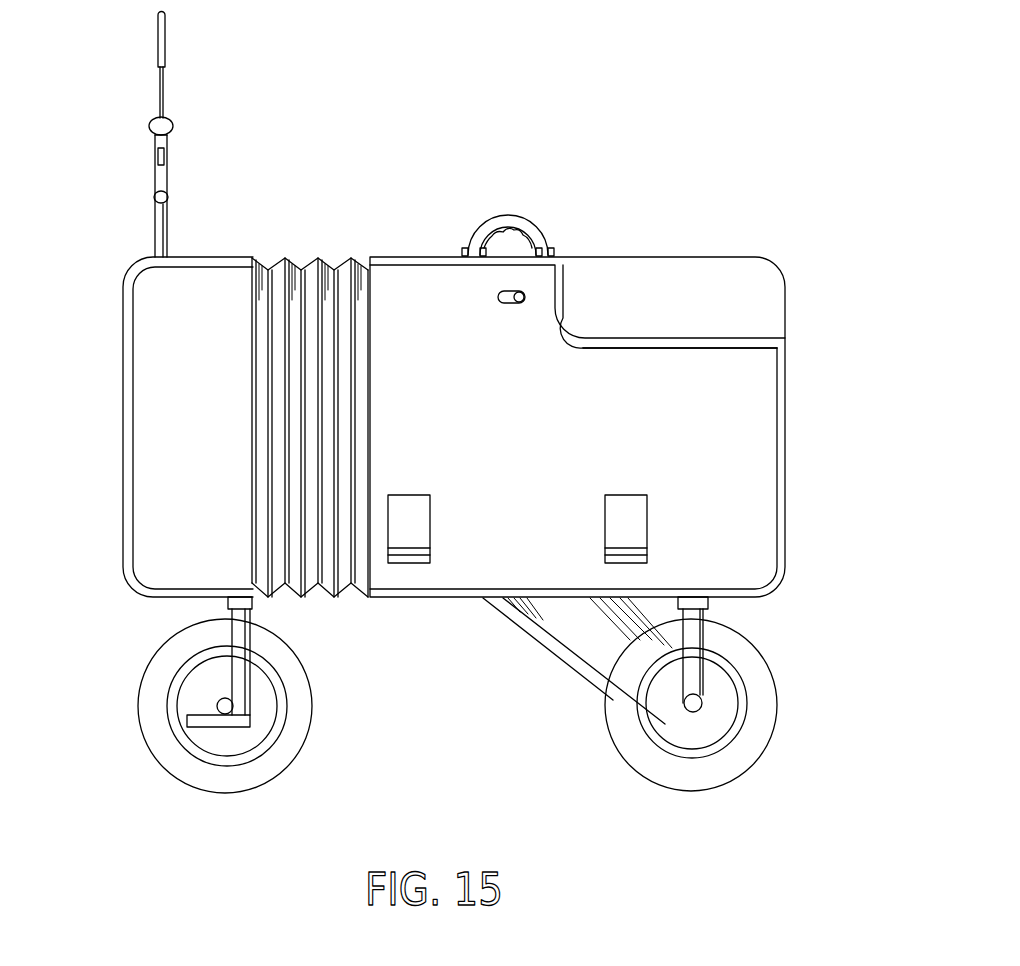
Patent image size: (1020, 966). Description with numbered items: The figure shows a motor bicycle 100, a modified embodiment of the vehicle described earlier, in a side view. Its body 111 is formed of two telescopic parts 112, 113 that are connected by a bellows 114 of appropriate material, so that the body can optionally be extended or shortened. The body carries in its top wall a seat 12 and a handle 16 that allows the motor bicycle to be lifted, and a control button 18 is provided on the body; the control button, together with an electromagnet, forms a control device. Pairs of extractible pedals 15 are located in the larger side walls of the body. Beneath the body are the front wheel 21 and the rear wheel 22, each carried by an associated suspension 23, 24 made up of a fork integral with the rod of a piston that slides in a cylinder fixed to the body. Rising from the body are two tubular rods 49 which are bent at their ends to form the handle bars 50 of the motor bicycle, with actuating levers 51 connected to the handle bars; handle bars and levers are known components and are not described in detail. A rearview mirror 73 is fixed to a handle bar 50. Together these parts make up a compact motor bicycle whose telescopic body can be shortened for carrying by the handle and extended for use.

The motor bicycle 100 is at (487, 403).
The rearview mirror 73 is at (166, 38).
The handle bars 50 is at (173, 127).
The actuating levers 51 is at (166, 178).
The tubular rods 49 is at (170, 235).
The telescopic part 112 is at (170, 458).
The bellows 114 is at (345, 265).
The body 111 is at (641, 404).
The seat 12 is at (738, 298).
The telescopic part 113 is at (736, 371).
The control button 18 is at (528, 297).
The handle 16 is at (548, 238).
The extractible pedals 15 is at (415, 535).
The suspension 23 is at (262, 655).
The front wheel 21 is at (160, 712).
The suspension 24 is at (727, 657).
The rear wheel 22 is at (760, 738).